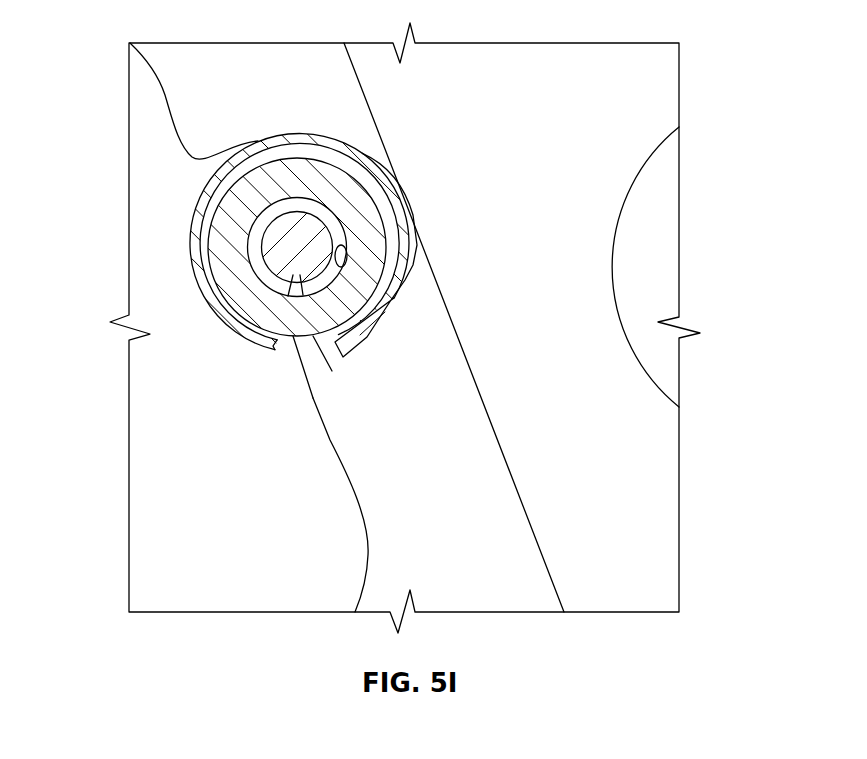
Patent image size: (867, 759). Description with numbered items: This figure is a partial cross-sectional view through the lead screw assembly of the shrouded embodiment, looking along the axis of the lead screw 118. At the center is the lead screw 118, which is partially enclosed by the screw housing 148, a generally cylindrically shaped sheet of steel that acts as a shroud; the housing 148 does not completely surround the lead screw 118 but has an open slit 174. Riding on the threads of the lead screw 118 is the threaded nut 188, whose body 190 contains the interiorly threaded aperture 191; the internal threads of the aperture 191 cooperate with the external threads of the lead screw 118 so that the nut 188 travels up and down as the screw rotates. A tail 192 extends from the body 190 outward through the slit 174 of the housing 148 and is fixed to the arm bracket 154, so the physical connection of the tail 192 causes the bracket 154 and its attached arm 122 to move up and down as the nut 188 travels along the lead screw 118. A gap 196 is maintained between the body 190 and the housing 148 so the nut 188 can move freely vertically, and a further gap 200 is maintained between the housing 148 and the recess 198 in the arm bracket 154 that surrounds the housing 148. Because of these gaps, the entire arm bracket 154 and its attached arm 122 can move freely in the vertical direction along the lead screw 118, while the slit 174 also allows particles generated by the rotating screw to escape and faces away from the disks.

The arm 122 is at (655, 497).
The gap 196 is at (213, 202).
The arm bracket 154 is at (374, 530).
The slit 174 is at (280, 348).
The tail 192 is at (320, 368).
The gap 200 is at (258, 141).
The recess 198 is at (308, 133).
The screw housing 148 is at (243, 340).
The body 190 is at (343, 207).
The threaded nut 188 is at (243, 197).
The lead screw 118 is at (290, 275).
The interiorly threaded aperture 191 is at (347, 264).